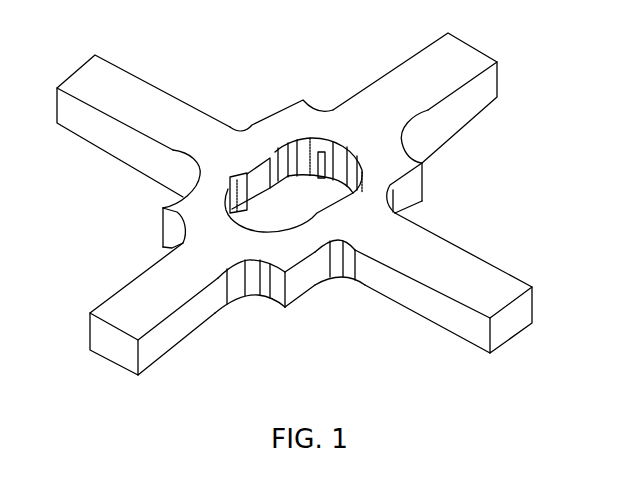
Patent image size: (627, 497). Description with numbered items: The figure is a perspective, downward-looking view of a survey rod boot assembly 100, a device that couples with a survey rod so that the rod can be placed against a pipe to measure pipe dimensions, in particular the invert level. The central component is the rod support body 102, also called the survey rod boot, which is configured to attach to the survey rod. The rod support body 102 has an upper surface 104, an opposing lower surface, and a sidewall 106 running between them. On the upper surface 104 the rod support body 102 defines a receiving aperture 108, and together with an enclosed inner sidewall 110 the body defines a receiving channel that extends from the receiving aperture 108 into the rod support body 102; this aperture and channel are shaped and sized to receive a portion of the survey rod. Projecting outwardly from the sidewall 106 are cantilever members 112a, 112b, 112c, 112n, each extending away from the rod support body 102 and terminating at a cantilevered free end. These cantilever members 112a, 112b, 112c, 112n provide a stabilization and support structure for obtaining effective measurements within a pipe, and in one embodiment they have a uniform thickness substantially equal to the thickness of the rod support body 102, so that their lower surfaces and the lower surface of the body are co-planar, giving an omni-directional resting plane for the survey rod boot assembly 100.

The survey rod boot assembly 100 is at (307, 203).
The rod support body 102 is at (435, 97).
The upper surface 104 is at (134, 308).
The sidewall 106 is at (303, 268).
The receiving aperture 108 is at (208, 133).
The enclosed inner sidewall 110 is at (258, 212).
The cantilever member 112a is at (465, 267).
The cantilever member 112b is at (443, 90).
The cantilever member 112c is at (152, 108).
The cantilever member 112n is at (160, 273).